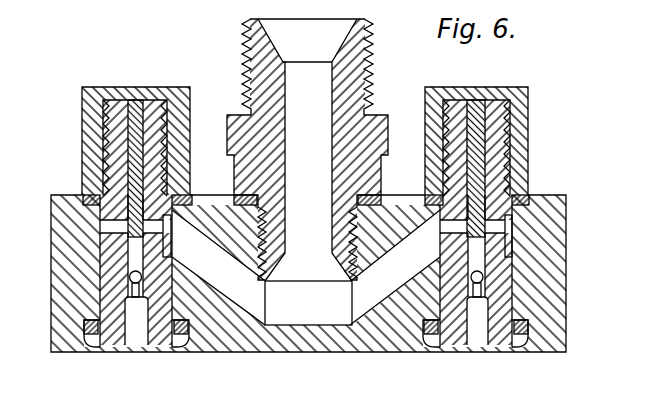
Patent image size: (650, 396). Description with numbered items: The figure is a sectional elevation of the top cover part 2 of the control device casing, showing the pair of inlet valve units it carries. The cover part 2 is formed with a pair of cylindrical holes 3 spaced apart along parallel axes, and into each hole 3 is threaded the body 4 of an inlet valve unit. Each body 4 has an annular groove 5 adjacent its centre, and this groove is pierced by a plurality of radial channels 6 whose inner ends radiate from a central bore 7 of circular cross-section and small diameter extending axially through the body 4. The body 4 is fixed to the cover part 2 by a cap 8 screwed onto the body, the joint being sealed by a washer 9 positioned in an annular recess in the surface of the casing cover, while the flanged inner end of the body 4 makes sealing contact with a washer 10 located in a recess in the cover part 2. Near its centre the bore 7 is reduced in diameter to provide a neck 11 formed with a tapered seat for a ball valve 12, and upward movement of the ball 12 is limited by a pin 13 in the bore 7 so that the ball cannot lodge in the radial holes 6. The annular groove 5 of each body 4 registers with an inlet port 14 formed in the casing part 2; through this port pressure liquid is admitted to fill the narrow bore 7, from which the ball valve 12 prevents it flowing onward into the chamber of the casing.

The top cover part 2 is at (565, 333).
The cylindrical hole 3 is at (510, 232).
The body 4 is at (117, 186).
The annular groove 5 is at (498, 224).
The radial channel 6 is at (92, 205).
The central bore 7 is at (130, 262).
The cap 8 is at (187, 88).
The washer 9 is at (533, 194).
The washer 10 is at (523, 340).
The neck 11 is at (128, 296).
The ball valve 12 is at (130, 278).
The pin 13 is at (130, 135).
The inlet port 14 is at (306, 55).